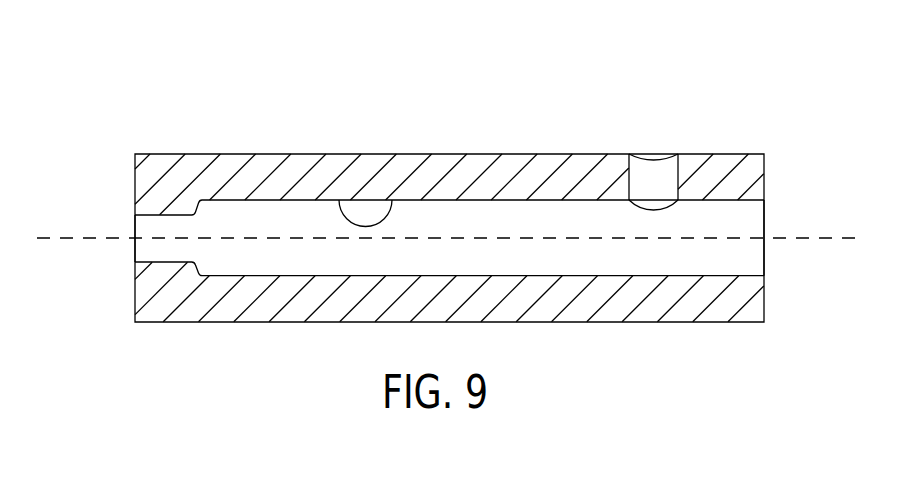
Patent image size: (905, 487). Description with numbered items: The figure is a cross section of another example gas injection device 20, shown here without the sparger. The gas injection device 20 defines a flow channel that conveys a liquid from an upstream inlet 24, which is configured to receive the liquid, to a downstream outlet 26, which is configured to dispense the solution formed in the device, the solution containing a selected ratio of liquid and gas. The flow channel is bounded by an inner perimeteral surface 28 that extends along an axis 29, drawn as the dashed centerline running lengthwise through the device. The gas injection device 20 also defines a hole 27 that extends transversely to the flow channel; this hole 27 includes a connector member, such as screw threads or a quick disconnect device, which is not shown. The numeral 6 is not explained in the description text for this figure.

The connector 6 is at (112, 72).
The gas injection device 20 is at (174, 95).
The upstream inlet 24 is at (650, 122).
The downstream outlet 26 is at (116, 259).
The hole 27 is at (750, 226).
The inner perimeteral surface 28 is at (339, 201).
The axis 29 is at (88, 238).